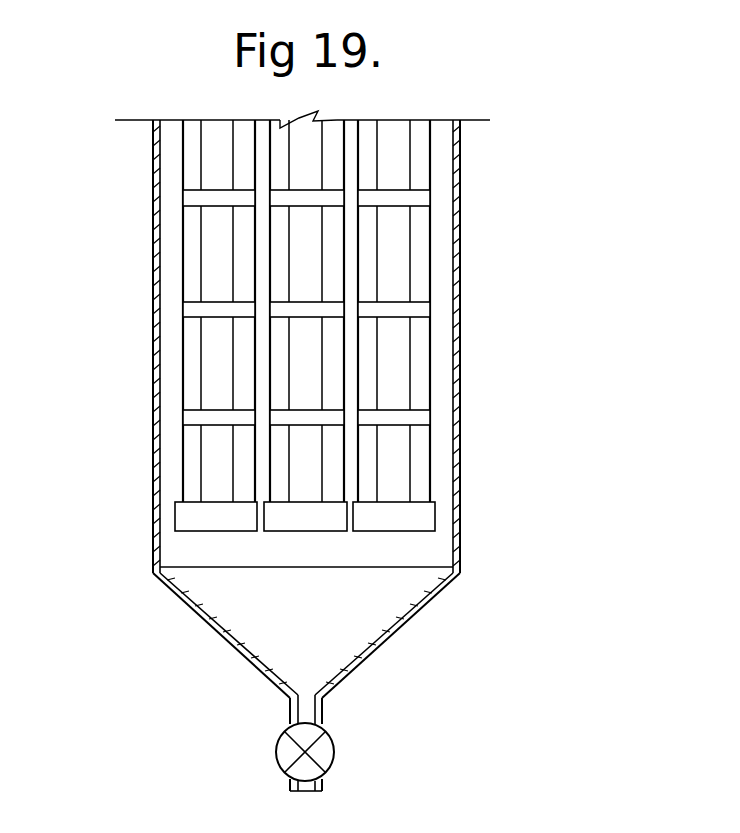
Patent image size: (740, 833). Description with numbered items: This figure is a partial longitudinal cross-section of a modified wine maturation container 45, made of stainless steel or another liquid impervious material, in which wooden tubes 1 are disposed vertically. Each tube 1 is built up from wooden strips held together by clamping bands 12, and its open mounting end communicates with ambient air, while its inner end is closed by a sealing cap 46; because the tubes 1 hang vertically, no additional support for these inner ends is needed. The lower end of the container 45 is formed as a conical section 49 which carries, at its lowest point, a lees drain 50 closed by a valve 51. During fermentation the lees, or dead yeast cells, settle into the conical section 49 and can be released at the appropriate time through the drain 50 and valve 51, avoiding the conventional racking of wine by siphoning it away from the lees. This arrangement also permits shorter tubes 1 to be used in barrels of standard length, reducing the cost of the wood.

The wooden tube 1 is at (387, 443).
The clamping band 12 is at (420, 198).
The maturation container 45 is at (460, 323).
The sealing cap 46 is at (417, 518).
The conical section 49 is at (252, 670).
The lees drain 50 is at (307, 715).
The valve 51 is at (327, 753).